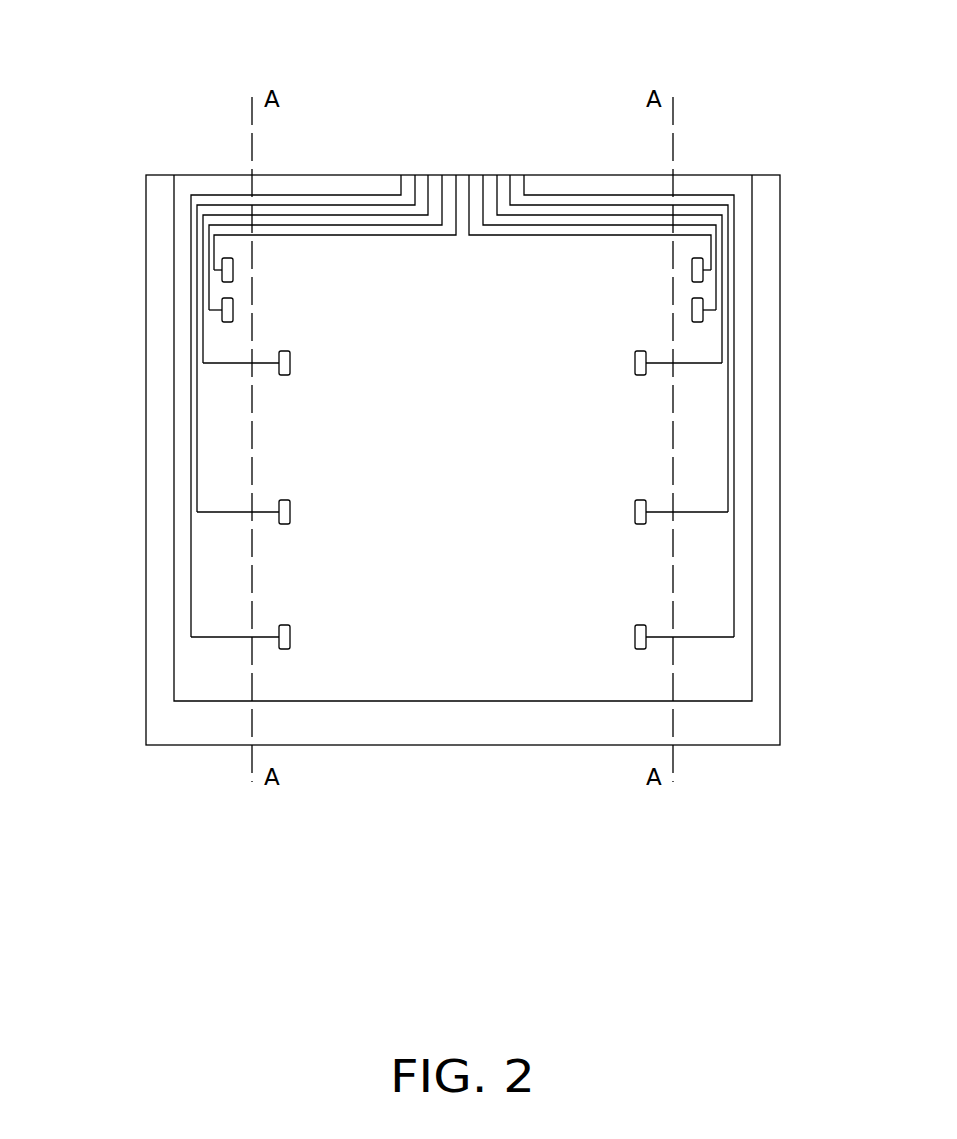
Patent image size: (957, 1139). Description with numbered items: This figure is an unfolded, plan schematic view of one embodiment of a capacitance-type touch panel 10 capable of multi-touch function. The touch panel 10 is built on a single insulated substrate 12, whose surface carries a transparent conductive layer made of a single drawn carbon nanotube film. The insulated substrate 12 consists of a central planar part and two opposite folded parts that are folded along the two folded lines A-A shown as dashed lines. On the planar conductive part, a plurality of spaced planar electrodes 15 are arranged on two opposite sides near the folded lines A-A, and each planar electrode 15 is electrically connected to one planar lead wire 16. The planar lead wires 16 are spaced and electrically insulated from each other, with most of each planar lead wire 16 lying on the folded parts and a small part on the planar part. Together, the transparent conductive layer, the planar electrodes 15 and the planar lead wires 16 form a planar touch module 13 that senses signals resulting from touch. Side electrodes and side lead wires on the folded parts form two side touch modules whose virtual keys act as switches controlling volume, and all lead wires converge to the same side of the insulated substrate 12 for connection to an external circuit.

The touch panel 10 is at (398, 75).
The insulated substrate 12 is at (760, 718).
The planar touch module 13 is at (82, 550).
The planar electrodes 15 is at (279, 628).
The planar lead wires 16 is at (215, 637).